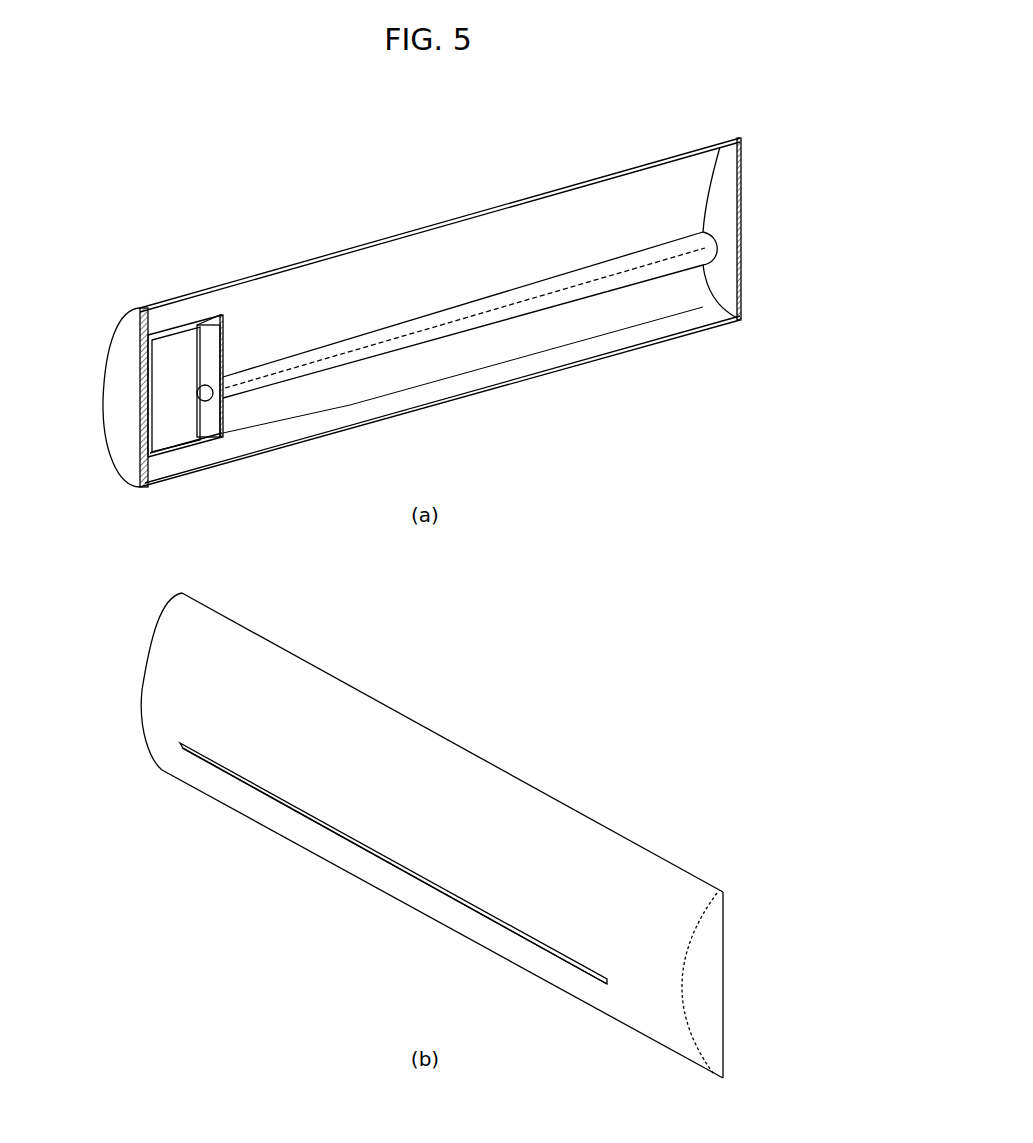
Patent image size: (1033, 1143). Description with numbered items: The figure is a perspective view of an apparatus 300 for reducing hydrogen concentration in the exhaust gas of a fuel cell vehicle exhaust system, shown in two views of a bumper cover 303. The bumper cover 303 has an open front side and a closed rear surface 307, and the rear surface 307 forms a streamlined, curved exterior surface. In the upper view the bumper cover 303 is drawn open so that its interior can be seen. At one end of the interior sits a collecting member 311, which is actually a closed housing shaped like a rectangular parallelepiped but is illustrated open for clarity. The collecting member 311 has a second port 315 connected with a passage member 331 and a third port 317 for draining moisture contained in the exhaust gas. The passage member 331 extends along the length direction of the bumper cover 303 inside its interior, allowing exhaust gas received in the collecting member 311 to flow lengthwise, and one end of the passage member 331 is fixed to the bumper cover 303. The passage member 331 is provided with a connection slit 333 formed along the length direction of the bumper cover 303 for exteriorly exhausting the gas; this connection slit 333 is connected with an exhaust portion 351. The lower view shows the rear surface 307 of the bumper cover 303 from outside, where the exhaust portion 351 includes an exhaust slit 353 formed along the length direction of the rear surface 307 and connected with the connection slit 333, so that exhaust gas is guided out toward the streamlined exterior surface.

The apparatus for reducing hydrogen concentration 300 is at (386, 138).
The bumper cover 303 is at (745, 214).
The rear surface 307 is at (105, 366).
The collecting member 311 is at (232, 326).
The second port 315 is at (215, 400).
The third port 317 is at (188, 452).
The passage member 331 is at (609, 254).
The connection slit 333 is at (205, 385).
The exhaust portion 351 is at (363, 851).
The exhaust slit 353 is at (423, 883).